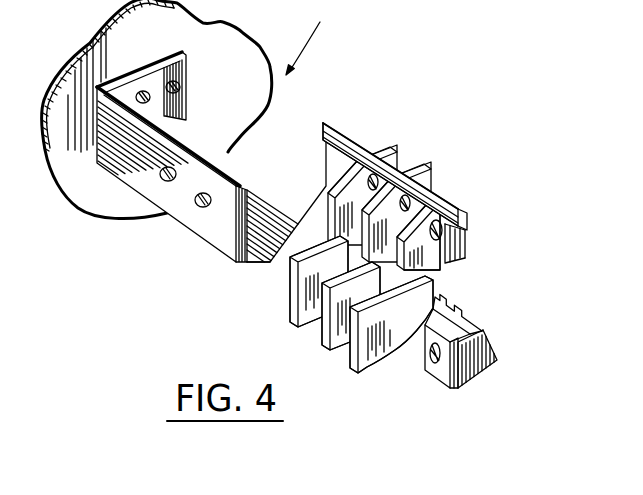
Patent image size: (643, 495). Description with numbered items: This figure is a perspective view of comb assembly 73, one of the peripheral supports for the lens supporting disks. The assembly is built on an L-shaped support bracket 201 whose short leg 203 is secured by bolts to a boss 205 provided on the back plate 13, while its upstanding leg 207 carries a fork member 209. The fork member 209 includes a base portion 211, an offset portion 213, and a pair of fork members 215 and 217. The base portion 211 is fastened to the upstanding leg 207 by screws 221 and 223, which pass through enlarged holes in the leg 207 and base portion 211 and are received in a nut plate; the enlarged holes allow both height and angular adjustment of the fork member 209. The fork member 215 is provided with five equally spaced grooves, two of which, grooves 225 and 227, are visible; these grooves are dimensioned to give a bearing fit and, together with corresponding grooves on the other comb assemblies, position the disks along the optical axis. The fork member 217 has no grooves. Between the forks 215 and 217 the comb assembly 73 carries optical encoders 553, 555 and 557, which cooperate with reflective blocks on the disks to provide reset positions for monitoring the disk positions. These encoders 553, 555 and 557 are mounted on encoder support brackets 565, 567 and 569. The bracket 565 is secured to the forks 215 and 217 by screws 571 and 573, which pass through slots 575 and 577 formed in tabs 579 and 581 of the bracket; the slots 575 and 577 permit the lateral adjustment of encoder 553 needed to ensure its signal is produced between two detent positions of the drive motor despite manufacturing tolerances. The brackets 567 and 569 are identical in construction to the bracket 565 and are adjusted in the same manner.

The back plate 13 is at (0, 437).
The comb assembly 73 is at (316, 46).
The L-shaped support bracket 201 is at (78, 90).
The short leg 203 is at (170, 50).
The boss 205 is at (259, 98).
The upstanding leg 207 is at (127, 160).
The fork member 209 is at (263, 208).
The base portion 211 is at (270, 253).
The offset portion 213 is at (337, 126).
The fork member 215 is at (483, 377).
The fork member 217 is at (448, 201).
The screw 221 is at (168, 183).
The screw 223 is at (204, 209).
The groove 225 is at (470, 319).
The groove 227 is at (450, 310).
The encoder 553 is at (355, 373).
The optical encoder 555 is at (321, 345).
The optical encoder 557 is at (290, 321).
The encoder support bracket 565 is at (432, 206).
The encoder support bracket 567 is at (415, 176).
The encoder support bracket 569 is at (380, 177).
The screw 571 is at (449, 228).
The screw 573 is at (449, 386).
The slot 575 is at (441, 264).
The slot 577 is at (434, 366).
The tab 579 is at (461, 209).
The tab 581 is at (484, 332).